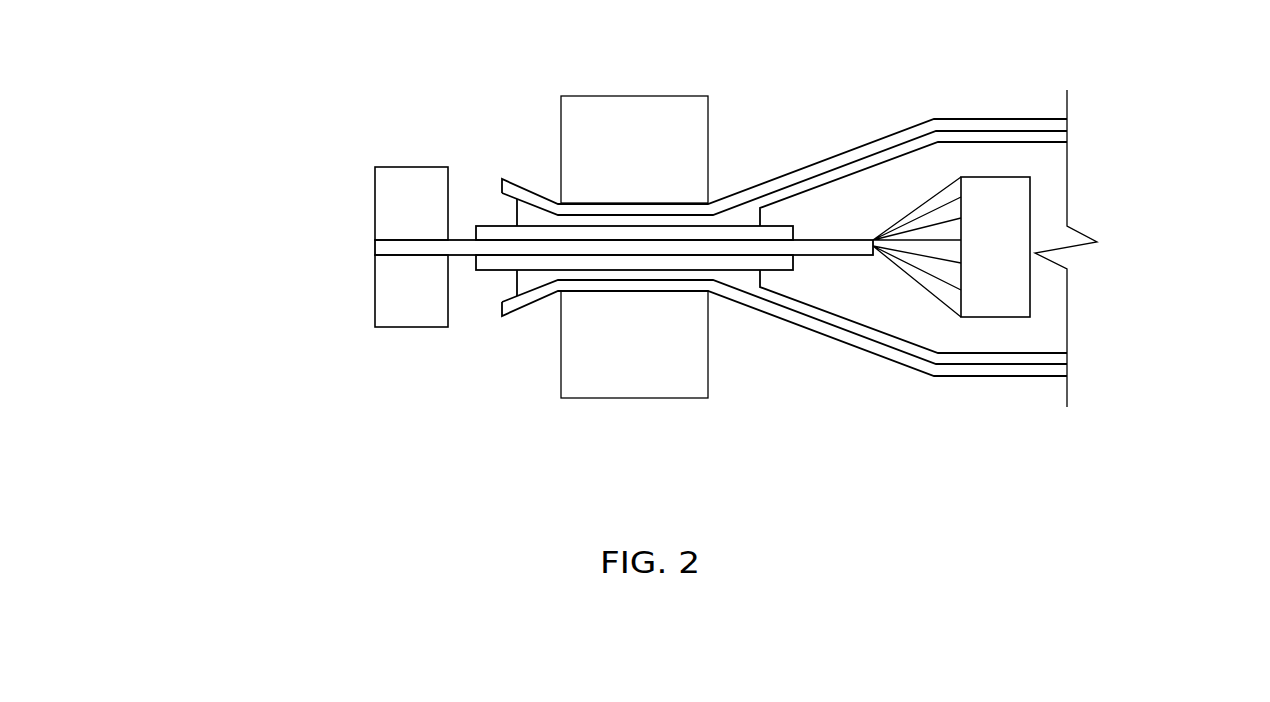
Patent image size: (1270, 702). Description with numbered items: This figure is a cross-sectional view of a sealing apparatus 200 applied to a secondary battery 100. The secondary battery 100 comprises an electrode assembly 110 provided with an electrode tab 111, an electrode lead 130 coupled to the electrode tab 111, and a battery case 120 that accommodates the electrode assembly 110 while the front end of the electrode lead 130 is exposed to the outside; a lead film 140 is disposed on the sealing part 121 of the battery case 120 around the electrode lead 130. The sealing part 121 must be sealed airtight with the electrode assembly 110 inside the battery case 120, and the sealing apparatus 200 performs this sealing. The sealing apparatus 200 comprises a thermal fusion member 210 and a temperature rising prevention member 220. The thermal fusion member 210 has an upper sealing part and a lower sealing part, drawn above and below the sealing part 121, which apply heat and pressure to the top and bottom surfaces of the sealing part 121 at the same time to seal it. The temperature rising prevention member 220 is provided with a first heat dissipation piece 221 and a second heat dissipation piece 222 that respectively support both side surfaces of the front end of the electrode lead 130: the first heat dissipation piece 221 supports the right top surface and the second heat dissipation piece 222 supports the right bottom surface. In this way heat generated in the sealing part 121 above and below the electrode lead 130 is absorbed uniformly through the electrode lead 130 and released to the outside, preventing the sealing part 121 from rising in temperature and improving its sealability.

The secondary battery 100 is at (1190, 62).
The electrode assembly 110 is at (1020, 213).
The electrode tab 111 is at (915, 196).
The battery case 120 is at (1060, 370).
The sealing part 121 is at (633, 203).
The electrode lead 130 is at (812, 241).
The lead film 140 is at (777, 232).
The sealing apparatus 200 is at (213, 247).
The thermal fusion member 210 is at (575, 129).
The temperature rising prevention member 220 is at (277, 207).
The first heat dissipation piece 221 is at (383, 193).
The second heat dissipation piece 222 is at (387, 271).